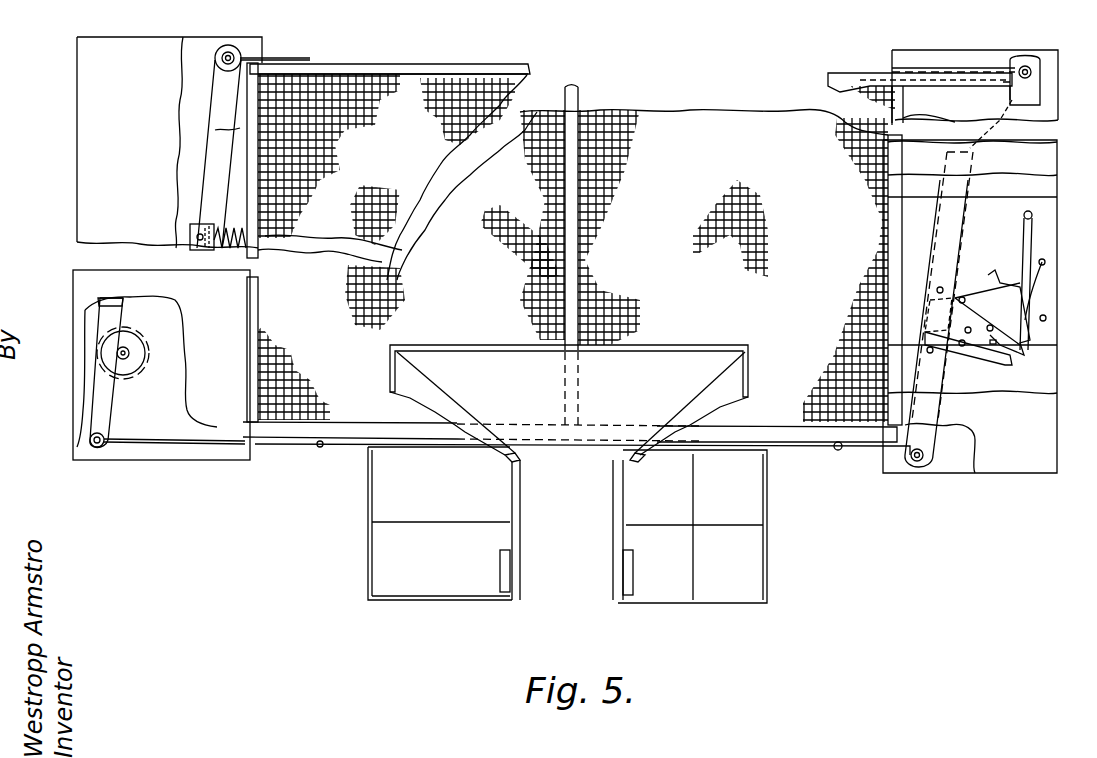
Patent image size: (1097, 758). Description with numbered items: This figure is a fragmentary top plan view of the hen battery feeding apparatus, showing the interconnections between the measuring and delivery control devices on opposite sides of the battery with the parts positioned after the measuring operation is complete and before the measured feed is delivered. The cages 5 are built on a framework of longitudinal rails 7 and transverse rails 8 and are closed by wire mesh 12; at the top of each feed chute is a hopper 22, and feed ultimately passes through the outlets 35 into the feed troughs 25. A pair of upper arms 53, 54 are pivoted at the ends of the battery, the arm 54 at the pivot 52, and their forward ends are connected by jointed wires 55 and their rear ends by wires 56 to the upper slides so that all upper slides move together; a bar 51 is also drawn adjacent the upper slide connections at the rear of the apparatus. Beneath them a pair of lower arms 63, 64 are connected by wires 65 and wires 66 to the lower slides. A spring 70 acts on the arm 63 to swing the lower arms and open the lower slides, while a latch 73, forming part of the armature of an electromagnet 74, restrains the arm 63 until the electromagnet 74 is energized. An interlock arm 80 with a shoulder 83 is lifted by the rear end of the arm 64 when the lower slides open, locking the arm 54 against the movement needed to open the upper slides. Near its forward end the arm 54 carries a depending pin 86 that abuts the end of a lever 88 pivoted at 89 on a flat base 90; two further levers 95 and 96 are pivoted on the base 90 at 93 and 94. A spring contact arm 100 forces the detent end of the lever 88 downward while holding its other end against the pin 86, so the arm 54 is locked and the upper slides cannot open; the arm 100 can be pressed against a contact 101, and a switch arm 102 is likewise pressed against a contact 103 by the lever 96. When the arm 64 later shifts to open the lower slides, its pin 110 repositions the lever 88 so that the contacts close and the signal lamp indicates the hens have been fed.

The cage 5 is at (462, 80).
The longitudinal rail 7 is at (400, 68).
The transverse rail 8 is at (580, 96).
The wire mesh 12 is at (832, 118).
The hopper 22 is at (485, 350).
The feed trough 25 is at (368, 568).
The outlet 35 is at (503, 580).
The latch bar 51 is at (880, 73).
The pivot 52 is at (917, 455).
The upper arm 53 is at (222, 83).
The upper arm 54 is at (1030, 90).
The jointed wire 55 is at (846, 448).
The wire 56 is at (284, 60).
The lower arm 63 is at (220, 130).
The lower arm 64 is at (996, 124).
The wire 65 is at (156, 444).
The wire 66 is at (305, 63).
The spring 70 is at (236, 252).
The latch 73 is at (126, 358).
The electromagnet 74 is at (140, 346).
The interlock arm 80 is at (934, 105).
The shoulder 83 is at (997, 95).
The depending pin 86 is at (926, 340).
The lever 88 is at (1010, 356).
The pivot 89 is at (962, 347).
The base 90 is at (1040, 207).
The pivot 93 is at (963, 298).
The pivot 94 is at (1035, 216).
The lever 95 is at (996, 276).
The lever 96 is at (1034, 242).
The spring contact arm 100 is at (969, 323).
The contact 101 is at (1004, 324).
The switch arm 102 is at (1043, 280).
The contact 103 is at (1048, 320).
The pin 110 is at (930, 354).